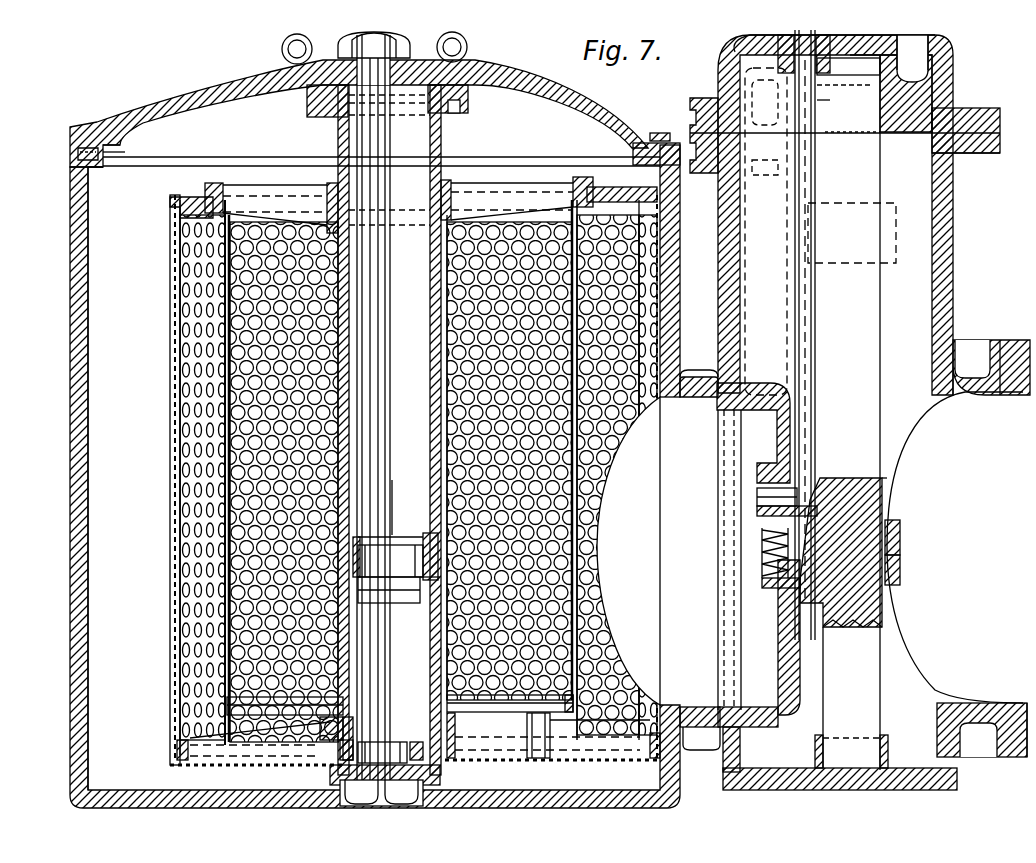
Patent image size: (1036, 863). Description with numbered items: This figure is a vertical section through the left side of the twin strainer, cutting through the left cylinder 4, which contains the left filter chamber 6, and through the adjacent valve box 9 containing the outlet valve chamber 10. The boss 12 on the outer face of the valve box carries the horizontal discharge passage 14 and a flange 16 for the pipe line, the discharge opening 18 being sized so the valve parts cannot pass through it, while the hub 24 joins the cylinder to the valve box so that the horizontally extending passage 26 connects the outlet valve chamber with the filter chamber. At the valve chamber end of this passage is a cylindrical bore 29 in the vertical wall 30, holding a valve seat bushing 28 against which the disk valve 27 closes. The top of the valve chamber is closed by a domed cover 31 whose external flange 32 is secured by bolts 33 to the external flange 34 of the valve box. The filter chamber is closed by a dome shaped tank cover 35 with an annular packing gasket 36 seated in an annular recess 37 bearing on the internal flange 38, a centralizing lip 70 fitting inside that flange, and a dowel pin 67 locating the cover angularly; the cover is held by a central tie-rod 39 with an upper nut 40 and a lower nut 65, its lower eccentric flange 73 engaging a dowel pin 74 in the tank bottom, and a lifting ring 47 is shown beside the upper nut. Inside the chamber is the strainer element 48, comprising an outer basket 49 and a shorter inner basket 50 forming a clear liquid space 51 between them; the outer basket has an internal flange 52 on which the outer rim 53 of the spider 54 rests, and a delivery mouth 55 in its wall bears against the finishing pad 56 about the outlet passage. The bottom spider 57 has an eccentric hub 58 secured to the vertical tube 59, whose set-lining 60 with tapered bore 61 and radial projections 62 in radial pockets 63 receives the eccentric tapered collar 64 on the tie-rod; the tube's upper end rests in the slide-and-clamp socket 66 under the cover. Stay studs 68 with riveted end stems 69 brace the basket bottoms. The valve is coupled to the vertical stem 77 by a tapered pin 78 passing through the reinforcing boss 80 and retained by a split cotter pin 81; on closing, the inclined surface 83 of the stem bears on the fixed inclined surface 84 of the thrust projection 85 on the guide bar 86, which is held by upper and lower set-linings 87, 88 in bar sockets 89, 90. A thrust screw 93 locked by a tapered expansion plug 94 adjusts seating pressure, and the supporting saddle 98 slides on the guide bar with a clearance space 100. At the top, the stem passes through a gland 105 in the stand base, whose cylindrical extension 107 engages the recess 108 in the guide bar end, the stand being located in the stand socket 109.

The left cylinder 4 is at (70, 250).
The left filter chamber 6 is at (90, 277).
The valve box 9 is at (940, 195).
The outlet valve chamber 10 is at (915, 218).
The boss 12 is at (975, 385).
The horizontal discharge passage 14 is at (992, 392).
The flange 16 is at (998, 755).
The bottom flange face 18 is at (1020, 755).
The hub 24 is at (700, 382).
The horizontally extending passage 26 is at (702, 725).
The disk valve 27 is at (785, 702).
The valve seat bushing 28 is at (730, 718).
The cylindrical bore 29 is at (735, 735).
The vertical wall 30 is at (735, 321).
The domed cover 31 is at (940, 60).
The external flange 32 is at (980, 114).
The bolt 33 is at (702, 98).
The external flange 34 is at (978, 150).
The tank cover 35 is at (155, 100).
The annular packing gasket 36 is at (122, 139).
The annular recess 37 is at (108, 147).
The internal flange 38 is at (95, 170).
The tie-rod 39 is at (386, 128).
The nut 40 is at (410, 52).
The lifting ring 47 is at (282, 50).
The strainer element 48 is at (205, 262).
The outer basket 49 is at (215, 277).
The inner basket 50 is at (230, 293).
The clear liquid space 51 is at (190, 309).
The internal flange 52 is at (180, 213).
The outer rim 53 is at (207, 190).
The spider 54 is at (303, 190).
The delivery mouth 55 is at (640, 405).
The finishing pad 56 is at (682, 362).
The bottom spider 57 is at (238, 760).
The eccentric hub 58 is at (478, 755).
The vertical tube 59 is at (432, 385).
The set-lining 60 is at (428, 520).
The tapered bore 61 is at (412, 540).
The radial projection 62 is at (428, 595).
The radial pocket 63 is at (420, 608).
The eccentric tapered collar 64 is at (395, 556).
The nut 65 is at (381, 793).
The slide-and-clamp socket 66 is at (455, 110).
The dowel pin 67 is at (72, 156).
The stay stud 68 is at (580, 752).
The end stem 69 is at (548, 752).
The centralizing lip 70 is at (648, 138).
The eccentric flange 73 is at (395, 745).
The dowel pin 74 is at (432, 773).
The valve stem 77 is at (813, 372).
The tapered pin 78 is at (770, 497).
The reinforcing boss 80 is at (765, 581).
The split cotter pin 81 is at (760, 511).
The inclined surface 83 is at (887, 492).
The fixed inclined surface 84 is at (822, 512).
The thrust projection 85 is at (895, 606).
The guide bar 86 is at (870, 399).
The upper set-lining 87 is at (898, 82).
The lower set-lining 88 is at (882, 742).
The upper bar socket 89 is at (904, 77).
The lower bar socket 90 is at (893, 752).
The thrust screw 93 is at (765, 540).
The tapered expansion plug 94 is at (760, 553).
The supporting saddle 98 is at (900, 546).
The clearance space 100 is at (900, 569).
The gland nut 105 is at (826, 65).
The cylindrical extension 107 is at (822, 87).
The seat or recess 108 is at (820, 100).
The stand hold or socket 109 is at (745, 45).